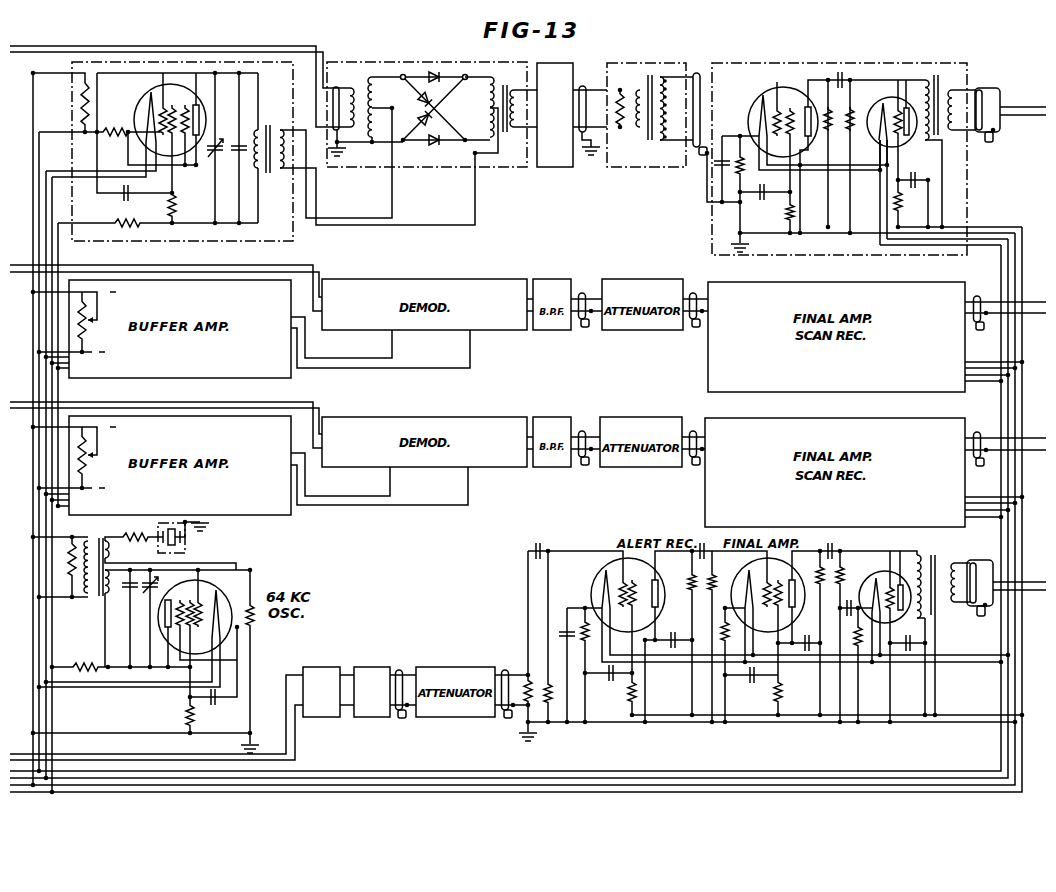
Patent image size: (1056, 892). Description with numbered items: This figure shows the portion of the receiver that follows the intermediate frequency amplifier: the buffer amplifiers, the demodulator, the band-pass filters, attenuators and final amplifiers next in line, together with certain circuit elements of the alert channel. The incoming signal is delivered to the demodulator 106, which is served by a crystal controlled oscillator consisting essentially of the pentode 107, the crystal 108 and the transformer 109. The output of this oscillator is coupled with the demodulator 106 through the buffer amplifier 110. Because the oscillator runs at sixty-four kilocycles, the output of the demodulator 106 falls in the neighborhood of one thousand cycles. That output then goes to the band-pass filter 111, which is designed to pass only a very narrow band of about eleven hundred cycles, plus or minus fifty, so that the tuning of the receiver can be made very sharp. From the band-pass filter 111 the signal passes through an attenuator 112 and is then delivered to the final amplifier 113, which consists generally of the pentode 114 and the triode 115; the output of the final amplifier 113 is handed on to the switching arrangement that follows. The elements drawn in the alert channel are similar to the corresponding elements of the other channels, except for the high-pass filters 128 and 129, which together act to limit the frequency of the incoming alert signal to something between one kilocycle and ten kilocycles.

The demodulator 106 is at (388, 62).
The pentode 107 is at (218, 592).
The crystal 108 is at (187, 544).
The transformer 109 is at (100, 601).
The buffer amplifier 110 is at (293, 237).
The band-pass filter 111 is at (570, 63).
The attenuator 112 is at (651, 64).
The final amplifier 113 is at (876, 150).
The pentode 114 is at (787, 97).
The triode 115 is at (893, 97).
The high-pass filter 128 is at (305, 667).
The high-pass filter 129 is at (355, 667).